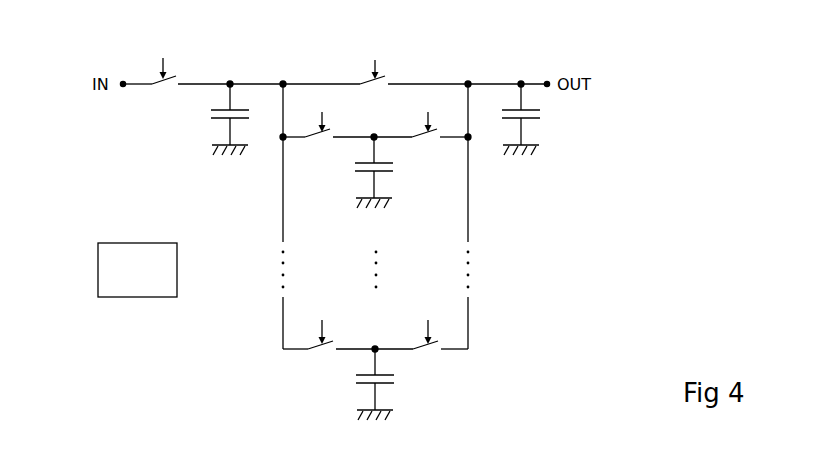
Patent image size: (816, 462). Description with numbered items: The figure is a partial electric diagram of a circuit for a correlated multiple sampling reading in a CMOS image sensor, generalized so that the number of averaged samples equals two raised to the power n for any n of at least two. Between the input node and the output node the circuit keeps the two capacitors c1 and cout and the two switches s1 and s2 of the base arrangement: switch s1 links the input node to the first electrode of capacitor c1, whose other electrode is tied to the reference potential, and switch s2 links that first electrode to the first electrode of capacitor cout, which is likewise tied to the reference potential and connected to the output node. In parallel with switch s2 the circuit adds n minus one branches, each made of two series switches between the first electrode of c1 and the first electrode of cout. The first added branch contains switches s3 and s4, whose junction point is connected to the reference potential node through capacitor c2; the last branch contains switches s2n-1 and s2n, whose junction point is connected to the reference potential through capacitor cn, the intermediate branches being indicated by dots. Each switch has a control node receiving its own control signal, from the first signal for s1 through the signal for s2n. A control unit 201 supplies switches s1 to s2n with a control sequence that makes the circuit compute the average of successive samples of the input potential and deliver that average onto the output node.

The control unit 201 is at (120, 243).
The switch s1 is at (163, 89).
The switch s2 is at (377, 88).
The switch s3 is at (322, 141).
The switch s4 is at (428, 141).
The switch s2n-1 is at (322, 353).
The switch s2n is at (428, 353).
The capacitor c1 is at (217, 131).
The capacitor c2 is at (361, 172).
The capacitor cn is at (384, 396).
The output capacitor cout is at (537, 131).